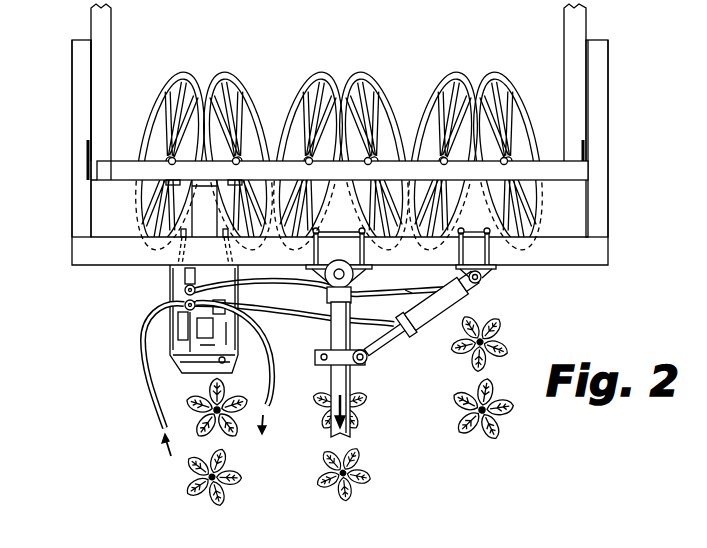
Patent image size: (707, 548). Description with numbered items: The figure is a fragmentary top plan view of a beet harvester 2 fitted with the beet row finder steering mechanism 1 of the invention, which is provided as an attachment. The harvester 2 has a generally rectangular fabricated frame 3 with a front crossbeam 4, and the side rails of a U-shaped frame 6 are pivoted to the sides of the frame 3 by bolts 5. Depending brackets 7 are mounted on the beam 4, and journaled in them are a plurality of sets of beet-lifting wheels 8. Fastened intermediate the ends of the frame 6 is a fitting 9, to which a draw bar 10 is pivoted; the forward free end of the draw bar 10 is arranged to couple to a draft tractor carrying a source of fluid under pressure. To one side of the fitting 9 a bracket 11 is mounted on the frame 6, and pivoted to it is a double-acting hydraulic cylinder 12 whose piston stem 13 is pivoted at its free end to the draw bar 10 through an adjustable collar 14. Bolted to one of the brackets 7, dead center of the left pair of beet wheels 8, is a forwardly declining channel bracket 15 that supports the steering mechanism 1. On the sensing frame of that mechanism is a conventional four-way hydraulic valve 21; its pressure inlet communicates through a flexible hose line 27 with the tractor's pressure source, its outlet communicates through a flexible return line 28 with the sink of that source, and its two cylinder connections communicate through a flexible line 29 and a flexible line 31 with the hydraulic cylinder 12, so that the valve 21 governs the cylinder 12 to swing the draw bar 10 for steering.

The beet row finder steering mechanism 1 is at (159, 319).
The beet harvester 2 is at (52, 184).
The frame 3 is at (115, 76).
The front crossbeam 4 is at (339, 162).
The bolts 5 is at (90, 57).
The U-shaped frame 6 is at (568, 266).
The depending brackets 7 is at (218, 156).
The beet-lifting wheels 8 is at (228, 65).
The fitting 9 is at (353, 287).
The draw bar 10 is at (330, 432).
The bracket 11 is at (487, 277).
The double-acting hydraulic cylinder 12 is at (436, 300).
The piston stem 13 is at (387, 343).
The adjustable collar 14 is at (322, 352).
The channel bracket 15 is at (213, 220).
The four-way hydraulic valve 21 is at (178, 297).
The flexible hose line 27 is at (158, 401).
The flexible return line 28 is at (270, 366).
The flexible line 29 is at (300, 306).
The flexible line 31 is at (405, 290).